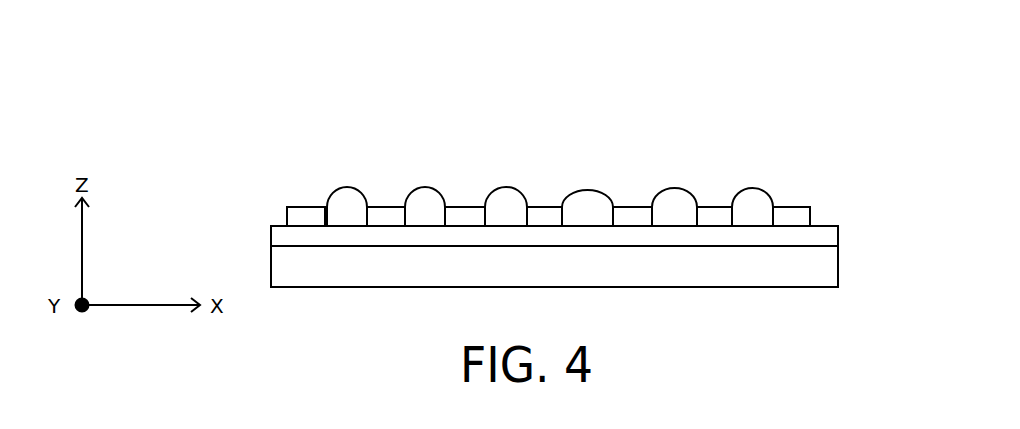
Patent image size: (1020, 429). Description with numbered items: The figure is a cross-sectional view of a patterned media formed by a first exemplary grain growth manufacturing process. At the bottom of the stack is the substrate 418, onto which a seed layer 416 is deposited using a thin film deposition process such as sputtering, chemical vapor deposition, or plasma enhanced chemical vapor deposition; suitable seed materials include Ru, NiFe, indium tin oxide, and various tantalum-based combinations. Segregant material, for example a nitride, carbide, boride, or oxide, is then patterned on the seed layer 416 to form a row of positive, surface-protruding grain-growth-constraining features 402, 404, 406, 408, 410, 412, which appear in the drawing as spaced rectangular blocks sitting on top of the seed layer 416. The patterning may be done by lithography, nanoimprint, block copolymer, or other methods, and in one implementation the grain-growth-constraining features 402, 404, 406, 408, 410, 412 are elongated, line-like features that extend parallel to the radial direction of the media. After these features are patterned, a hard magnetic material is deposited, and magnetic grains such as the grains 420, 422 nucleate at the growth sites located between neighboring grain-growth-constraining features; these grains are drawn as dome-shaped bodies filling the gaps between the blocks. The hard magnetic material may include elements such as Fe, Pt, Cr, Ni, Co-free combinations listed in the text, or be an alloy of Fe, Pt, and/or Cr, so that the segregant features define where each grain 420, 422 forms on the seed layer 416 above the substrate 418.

The grain-growth-constraining feature 402 is at (307, 210).
The grain-growth-constraining feature 404 is at (375, 218).
The grain-growth-constraining feature 406 is at (465, 218).
The grain-growth-constraining feature 408 is at (541, 222).
The grain-growth-constraining feature 410 is at (628, 218).
The grain-growth-constraining feature 412 is at (713, 220).
The seed layer 416 is at (782, 237).
The substrate 418 is at (571, 283).
The magnetic grain 420 is at (345, 187).
The magnetic grain 422 is at (505, 190).